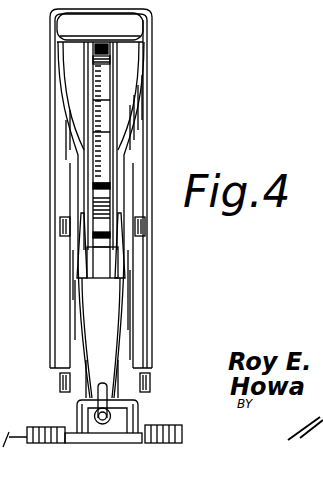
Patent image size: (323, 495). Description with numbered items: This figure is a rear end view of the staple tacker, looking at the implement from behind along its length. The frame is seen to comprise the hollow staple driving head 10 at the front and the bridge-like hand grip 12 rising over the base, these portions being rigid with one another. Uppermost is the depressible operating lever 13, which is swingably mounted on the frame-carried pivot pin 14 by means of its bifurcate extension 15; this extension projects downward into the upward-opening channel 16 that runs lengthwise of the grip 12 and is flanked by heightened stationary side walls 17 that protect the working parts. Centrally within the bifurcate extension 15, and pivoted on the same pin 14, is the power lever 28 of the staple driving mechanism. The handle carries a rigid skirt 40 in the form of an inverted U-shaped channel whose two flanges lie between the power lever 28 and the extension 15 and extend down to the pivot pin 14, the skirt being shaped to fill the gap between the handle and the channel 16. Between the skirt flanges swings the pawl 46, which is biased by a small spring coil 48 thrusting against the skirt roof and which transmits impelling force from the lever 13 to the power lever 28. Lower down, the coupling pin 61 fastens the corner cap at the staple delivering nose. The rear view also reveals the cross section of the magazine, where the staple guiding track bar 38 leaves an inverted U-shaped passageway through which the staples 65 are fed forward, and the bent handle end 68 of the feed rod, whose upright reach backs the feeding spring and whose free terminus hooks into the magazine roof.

The staple driving head 10 is at (62, 152).
The hand grip 12 is at (103, 290).
The operating lever 13 is at (70, 25).
The pivot pin 14 is at (63, 228).
The bifurcate extension 15 is at (56, 130).
The channel 16 is at (93, 265).
The stationary side walls 17 is at (72, 252).
The power lever 28 is at (103, 210).
The track bar 38 is at (93, 431).
The skirt 40 is at (94, 77).
The pawl 46 is at (104, 62).
The spring coil 48 is at (104, 50).
The coupling pin 61 is at (61, 387).
The staples 65 is at (82, 420).
The bent handle end 68 is at (97, 403).